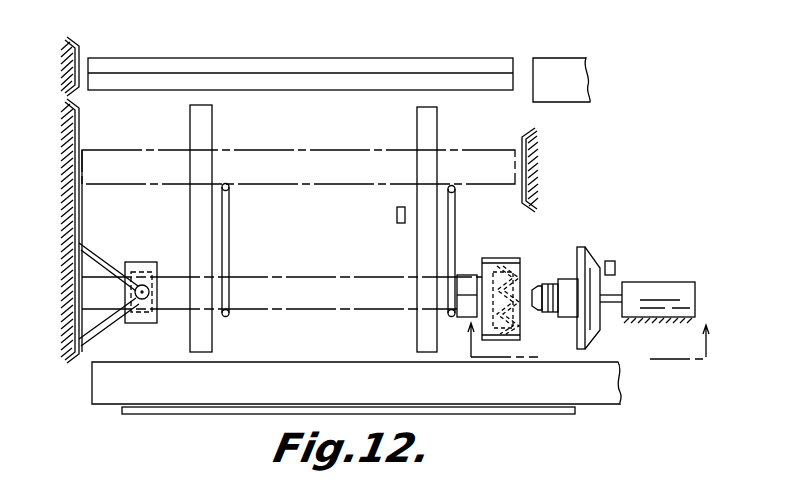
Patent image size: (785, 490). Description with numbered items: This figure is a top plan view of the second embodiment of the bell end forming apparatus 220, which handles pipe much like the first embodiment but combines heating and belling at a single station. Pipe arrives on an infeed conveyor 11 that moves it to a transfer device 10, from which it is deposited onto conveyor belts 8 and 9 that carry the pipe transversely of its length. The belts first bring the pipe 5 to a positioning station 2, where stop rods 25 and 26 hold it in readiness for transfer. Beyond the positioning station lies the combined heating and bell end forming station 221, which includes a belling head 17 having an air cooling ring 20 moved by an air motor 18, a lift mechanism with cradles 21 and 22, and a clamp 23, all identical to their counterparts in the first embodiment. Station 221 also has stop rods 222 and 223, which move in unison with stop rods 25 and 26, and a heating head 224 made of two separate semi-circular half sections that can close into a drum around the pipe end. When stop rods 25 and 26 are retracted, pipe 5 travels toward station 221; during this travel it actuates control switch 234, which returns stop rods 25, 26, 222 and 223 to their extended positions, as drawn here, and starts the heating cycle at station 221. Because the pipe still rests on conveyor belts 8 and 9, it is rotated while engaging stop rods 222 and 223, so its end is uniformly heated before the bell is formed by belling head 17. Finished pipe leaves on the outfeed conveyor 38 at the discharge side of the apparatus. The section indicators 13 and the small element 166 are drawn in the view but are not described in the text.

The transfer device 10 is at (334, 57).
The apparatus 220 is at (501, 59).
The infeed conveyor 11 is at (574, 72).
The conveyor belt 8 is at (206, 119).
The conveyor belt 9 is at (430, 121).
The pipe 5 is at (327, 150).
The positioning station 2 is at (477, 141).
The stop rod 25 is at (231, 190).
The stop rod 26 is at (457, 190).
The control switch 234 is at (394, 212).
The cradle 22 is at (142, 274).
The clamp 23 is at (134, 323).
The cradle 21 is at (470, 275).
The heating head 224 is at (508, 256).
The combined heating and bell end forming station 221 is at (533, 253).
The limit switch 166 is at (610, 261).
The air motor 18 is at (655, 296).
The belling head 17 is at (545, 313).
The air cooling ring 20 is at (603, 331).
The stop rod 222 is at (228, 317).
The stop rod 223 is at (446, 315).
The section line 13- 13 is at (593, 343).
The outfeed conveyor 38 is at (603, 395).